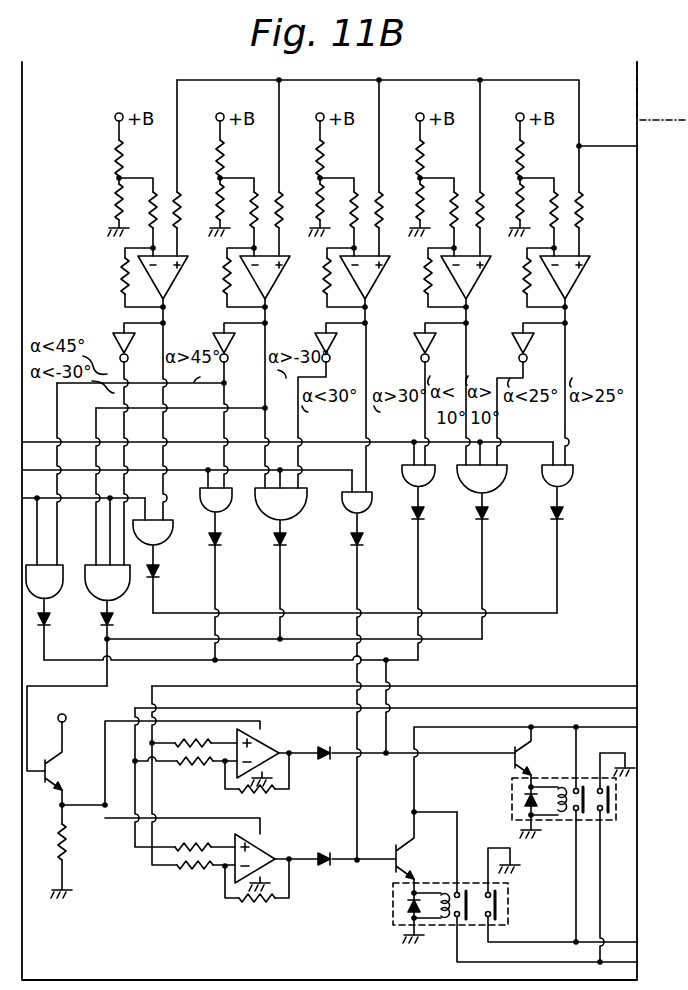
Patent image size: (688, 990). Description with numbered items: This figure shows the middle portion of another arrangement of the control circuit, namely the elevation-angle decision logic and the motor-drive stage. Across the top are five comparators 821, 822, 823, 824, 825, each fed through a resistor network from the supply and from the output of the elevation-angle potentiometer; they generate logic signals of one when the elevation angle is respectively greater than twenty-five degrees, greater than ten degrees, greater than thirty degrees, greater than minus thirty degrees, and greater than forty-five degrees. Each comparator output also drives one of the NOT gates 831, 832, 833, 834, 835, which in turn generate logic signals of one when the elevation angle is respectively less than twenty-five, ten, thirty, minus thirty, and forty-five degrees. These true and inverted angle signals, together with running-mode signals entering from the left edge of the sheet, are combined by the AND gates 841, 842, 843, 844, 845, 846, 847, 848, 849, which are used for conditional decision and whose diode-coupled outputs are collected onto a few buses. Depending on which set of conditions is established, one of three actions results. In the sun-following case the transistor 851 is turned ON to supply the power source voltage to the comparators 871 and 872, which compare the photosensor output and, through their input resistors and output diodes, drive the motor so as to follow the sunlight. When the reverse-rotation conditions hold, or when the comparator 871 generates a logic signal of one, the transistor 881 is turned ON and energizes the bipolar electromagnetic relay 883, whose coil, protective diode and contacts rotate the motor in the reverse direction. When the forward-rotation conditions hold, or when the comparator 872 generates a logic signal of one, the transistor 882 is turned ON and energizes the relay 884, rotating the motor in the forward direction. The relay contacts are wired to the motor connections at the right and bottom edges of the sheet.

The comparator 821 is at (571, 281).
The comparator 822 is at (472, 281).
The comparator 823 is at (371, 281).
The comparator 824 is at (271, 281).
The comparator 825 is at (169, 281).
The NOT gate 831 is at (514, 344).
The NOT gate 832 is at (416, 343).
The NOT gate 833 is at (316, 340).
The NOT gate 834 is at (215, 340).
The NOT gate 835 is at (114, 340).
The AND gate 841 is at (575, 488).
The AND gate 842 is at (503, 495).
The AND gate 843 is at (433, 492).
The AND gate 844 is at (373, 514).
The AND gate 845 is at (301, 522).
The AND gate 846 is at (232, 520).
The AND gate 847 is at (163, 545).
The AND gate 848 is at (120, 606).
The AND gate 849 is at (52, 602).
The transistor 851 is at (78, 770).
The comparator 871 is at (270, 740).
The comparator 872 is at (265, 843).
The transistor 881 is at (508, 762).
The transistor 882 is at (394, 842).
The bipolar electromagnetic relay 883 is at (512, 795).
The bipolar electromagnetic relay 884 is at (393, 905).